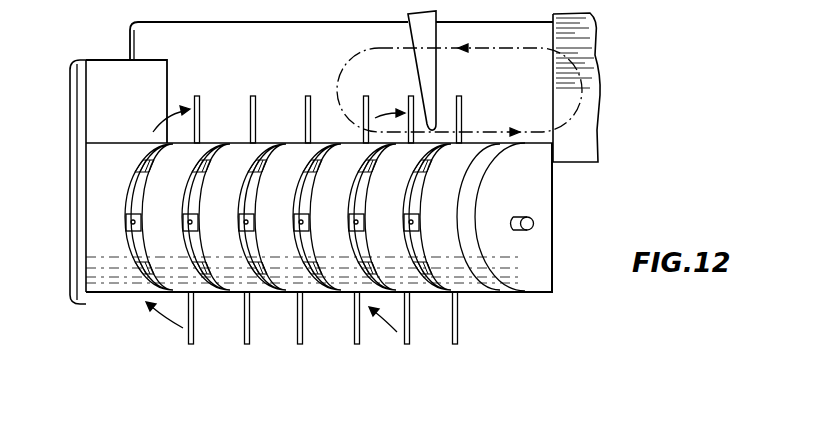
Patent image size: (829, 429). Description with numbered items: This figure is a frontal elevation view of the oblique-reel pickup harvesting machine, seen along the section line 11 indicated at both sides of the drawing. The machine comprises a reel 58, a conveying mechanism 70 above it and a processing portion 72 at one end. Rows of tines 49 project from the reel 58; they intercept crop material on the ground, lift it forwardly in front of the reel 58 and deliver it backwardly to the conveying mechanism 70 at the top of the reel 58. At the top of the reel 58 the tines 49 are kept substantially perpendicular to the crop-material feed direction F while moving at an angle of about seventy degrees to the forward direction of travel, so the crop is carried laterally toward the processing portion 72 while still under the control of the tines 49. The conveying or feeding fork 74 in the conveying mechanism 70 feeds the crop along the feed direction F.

The section line 11- 11 is at (123, 42).
The tines 49 is at (404, 325).
The reel 58 is at (605, 216).
The conveying mechanism 70 is at (330, 65).
The processing portion 72 is at (588, 134).
The conveying or feeding fork 74 is at (436, 72).
The crop-material feed direction F is at (478, 131).